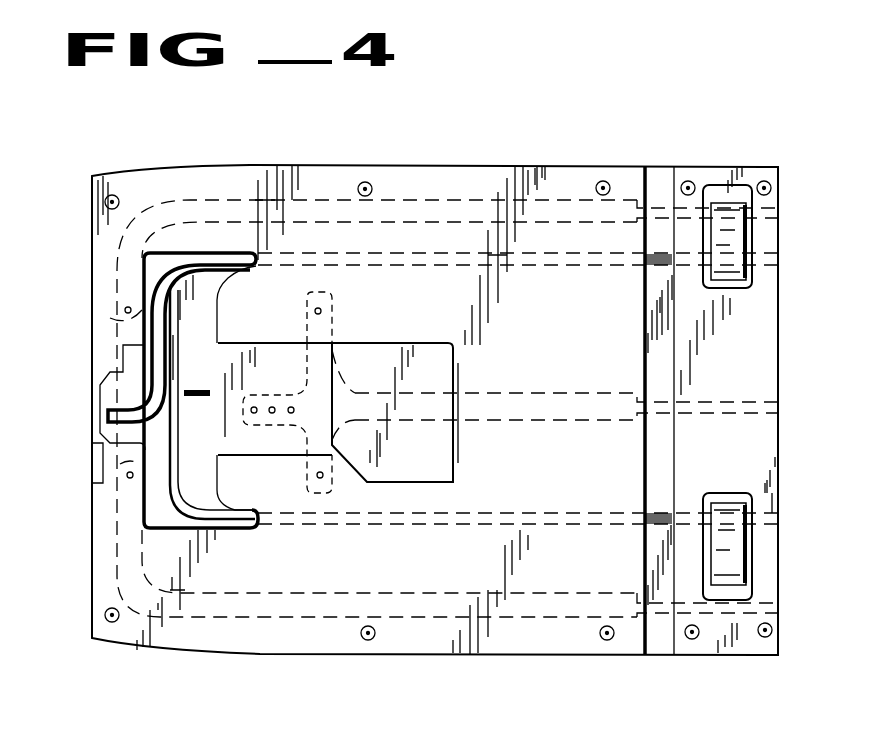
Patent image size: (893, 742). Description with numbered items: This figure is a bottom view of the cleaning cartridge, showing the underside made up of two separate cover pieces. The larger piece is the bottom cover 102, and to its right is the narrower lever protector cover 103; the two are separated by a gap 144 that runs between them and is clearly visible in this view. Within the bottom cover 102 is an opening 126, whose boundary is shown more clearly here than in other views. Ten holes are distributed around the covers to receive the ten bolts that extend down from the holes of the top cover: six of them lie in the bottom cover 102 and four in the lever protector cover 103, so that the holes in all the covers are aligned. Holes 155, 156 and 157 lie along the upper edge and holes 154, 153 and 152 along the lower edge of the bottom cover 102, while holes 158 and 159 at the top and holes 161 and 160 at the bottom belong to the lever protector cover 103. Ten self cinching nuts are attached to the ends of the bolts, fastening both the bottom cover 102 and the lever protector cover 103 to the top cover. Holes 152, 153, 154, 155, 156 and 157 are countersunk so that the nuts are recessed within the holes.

The bottom cover 102 is at (568, 175).
The lever protector cover 103 is at (757, 172).
The opening 126 is at (432, 355).
The gap 144 is at (660, 180).
The hole 152 is at (607, 640).
The hole 153 is at (368, 640).
The hole 154 is at (112, 622).
The hole 155 is at (112, 195).
The hole 156 is at (366, 182).
The hole 157 is at (604, 181).
The hole 158 is at (692, 186).
The hole 159 is at (771, 188).
The hole 160 is at (772, 632).
The hole 161 is at (693, 639).